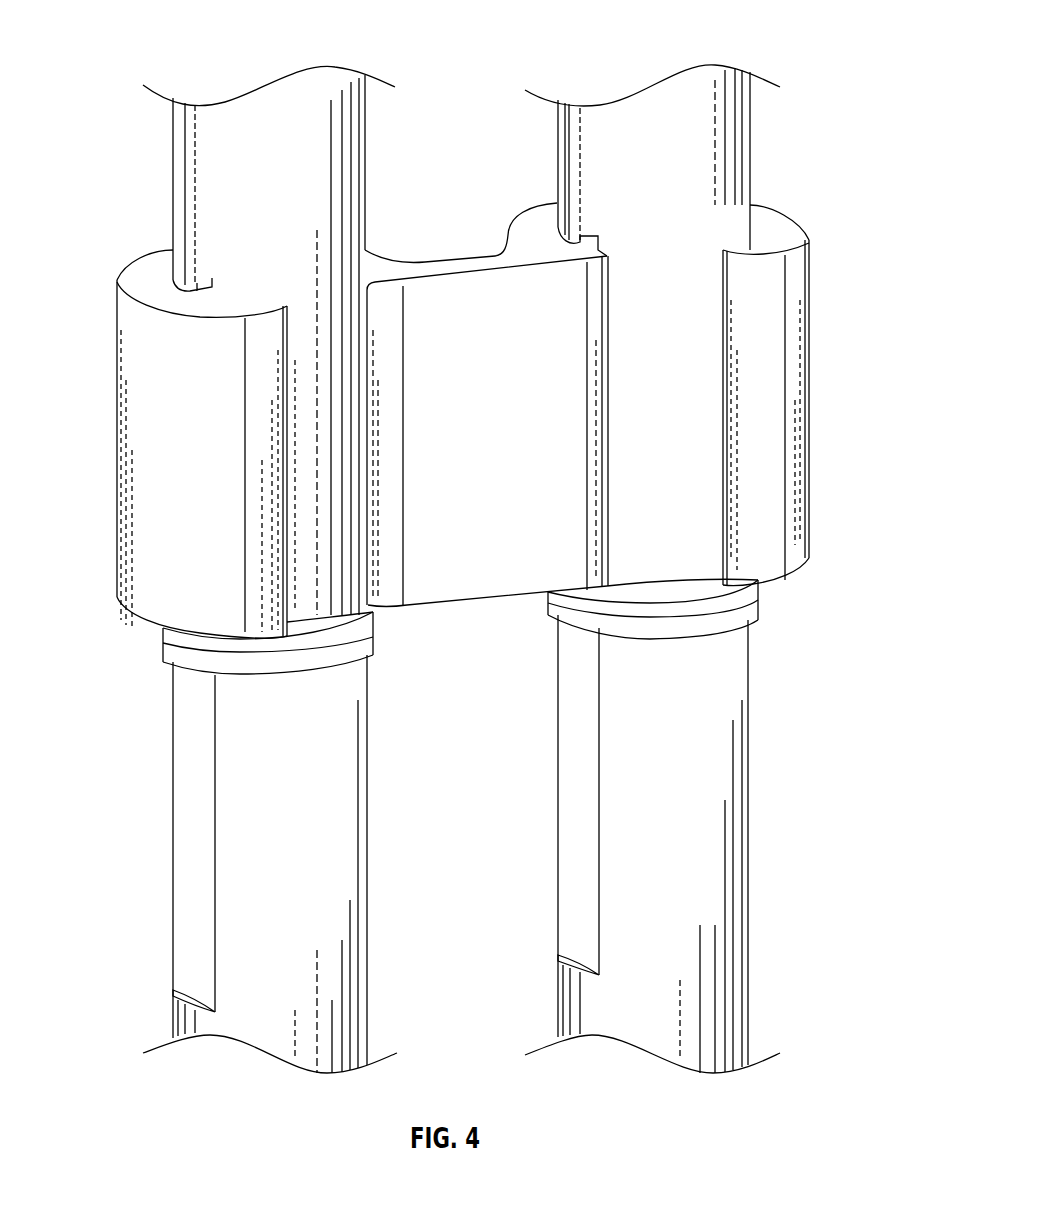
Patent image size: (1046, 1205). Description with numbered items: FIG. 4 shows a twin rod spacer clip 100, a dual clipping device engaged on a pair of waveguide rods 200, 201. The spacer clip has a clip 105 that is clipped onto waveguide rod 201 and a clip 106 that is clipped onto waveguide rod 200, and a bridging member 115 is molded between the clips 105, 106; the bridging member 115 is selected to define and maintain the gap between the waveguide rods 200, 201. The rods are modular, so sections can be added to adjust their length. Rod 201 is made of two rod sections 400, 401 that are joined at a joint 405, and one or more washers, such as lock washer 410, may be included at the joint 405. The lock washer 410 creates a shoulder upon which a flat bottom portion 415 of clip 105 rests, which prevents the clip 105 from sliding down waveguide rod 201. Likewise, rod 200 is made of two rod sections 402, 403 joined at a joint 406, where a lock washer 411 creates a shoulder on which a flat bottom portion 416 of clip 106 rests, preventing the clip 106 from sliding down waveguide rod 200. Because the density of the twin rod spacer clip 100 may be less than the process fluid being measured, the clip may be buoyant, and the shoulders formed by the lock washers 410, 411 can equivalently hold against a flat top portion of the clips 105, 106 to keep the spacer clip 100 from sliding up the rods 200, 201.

The twin rod spacer clip 100 is at (778, 37).
The rod section 401 is at (185, 170).
The rod section 403 is at (735, 148).
The clip 105 is at (175, 430).
The clip 106 is at (794, 378).
The bridging member 115 is at (458, 265).
The flat bottom portion 415 is at (116, 598).
The flat bottom portion 416 is at (810, 557).
The joint 405 is at (163, 638).
The lock washer 410 is at (156, 662).
The joint 406 is at (764, 583).
The lock washer 411 is at (770, 606).
The rod section 400 is at (243, 864).
The rod section 402 is at (677, 844).
The waveguide rod 201 is at (161, 1003).
The waveguide rod 200 is at (761, 1002).